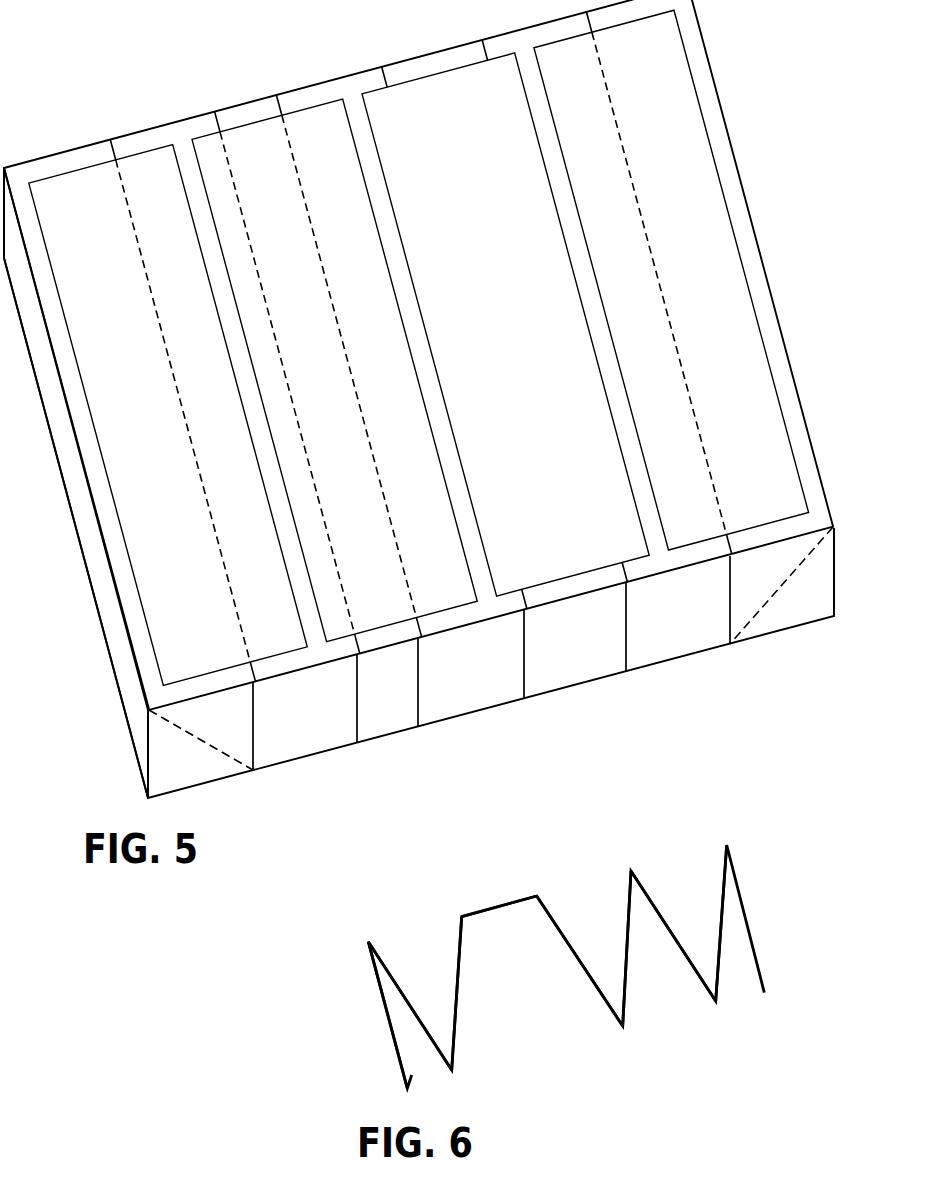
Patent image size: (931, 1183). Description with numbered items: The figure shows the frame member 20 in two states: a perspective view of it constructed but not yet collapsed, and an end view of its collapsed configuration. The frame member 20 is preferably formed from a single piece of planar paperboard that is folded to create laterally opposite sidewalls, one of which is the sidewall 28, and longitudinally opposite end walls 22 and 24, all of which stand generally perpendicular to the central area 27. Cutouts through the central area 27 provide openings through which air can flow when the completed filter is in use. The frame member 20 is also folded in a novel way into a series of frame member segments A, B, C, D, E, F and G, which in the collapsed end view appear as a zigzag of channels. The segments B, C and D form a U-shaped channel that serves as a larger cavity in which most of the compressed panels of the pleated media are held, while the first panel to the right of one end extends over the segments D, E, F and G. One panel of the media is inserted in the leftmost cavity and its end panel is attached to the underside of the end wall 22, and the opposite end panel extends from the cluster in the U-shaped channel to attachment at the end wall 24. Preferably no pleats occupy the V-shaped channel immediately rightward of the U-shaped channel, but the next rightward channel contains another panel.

In FIG. 5, the frame member 20 is at (768, 82).
In FIG. 6, the end wall 22 is at (743, 910).
In FIG. 5, the end wall 24 is at (133, 698).
In FIG. 6, the end wall 24 is at (388, 1018).
In FIG. 5, the central area 27 is at (373, 267).
In FIG. 5, the sidewall 28 is at (773, 612).
In FIG. 5, the frame member segment A is at (200, 684).
In FIG. 6, the frame member segment A is at (377, 955).
In FIG. 5, the frame member segment B is at (297, 658).
In FIG. 6, the frame member segment B is at (459, 933).
In FIG. 5, the frame member segment C is at (385, 635).
In FIG. 6, the frame member segment C is at (500, 905).
In FIG. 5, the frame member segment D is at (470, 612).
In FIG. 6, the frame member segment D is at (552, 918).
In FIG. 5, the frame member segment E is at (567, 588).
In FIG. 6, the frame member segment E is at (630, 883).
In FIG. 5, the frame member segment F is at (668, 561).
In FIG. 6, the frame member segment F is at (647, 895).
In FIG. 5, the frame member segment G is at (770, 532).
In FIG. 6, the frame member segment G is at (724, 872).